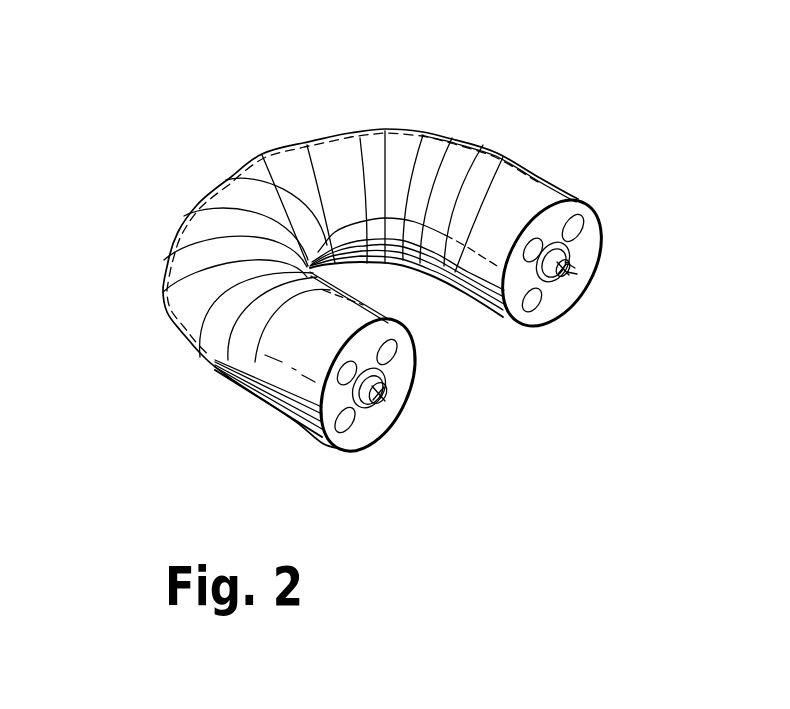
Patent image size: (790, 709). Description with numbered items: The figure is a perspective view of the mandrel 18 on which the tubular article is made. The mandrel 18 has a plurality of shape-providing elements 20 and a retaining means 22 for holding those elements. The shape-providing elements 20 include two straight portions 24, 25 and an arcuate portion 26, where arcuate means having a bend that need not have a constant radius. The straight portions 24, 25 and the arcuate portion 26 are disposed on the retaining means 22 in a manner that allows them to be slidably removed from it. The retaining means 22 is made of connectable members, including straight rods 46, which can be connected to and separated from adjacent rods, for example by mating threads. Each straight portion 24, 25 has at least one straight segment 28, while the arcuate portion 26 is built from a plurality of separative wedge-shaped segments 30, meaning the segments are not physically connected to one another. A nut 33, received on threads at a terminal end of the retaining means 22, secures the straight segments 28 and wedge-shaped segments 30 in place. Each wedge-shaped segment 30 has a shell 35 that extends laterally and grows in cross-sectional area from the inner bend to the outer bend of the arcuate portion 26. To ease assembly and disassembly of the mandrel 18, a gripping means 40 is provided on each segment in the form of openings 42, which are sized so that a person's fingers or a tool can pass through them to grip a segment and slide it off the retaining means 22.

The mandrel 18 is at (422, 72).
The shape-providing elements 20 is at (535, 166).
The retaining means 22 is at (576, 266).
The straight portion 24 is at (291, 418).
The straight portion 25 is at (560, 180).
The arcuate portion 26 is at (257, 147).
The straight segment 28 is at (487, 275).
The wedge-shaped segments 30 is at (160, 294).
The nut 33 is at (377, 402).
The shell 35 is at (360, 135).
The gripping means 40 is at (345, 435).
The openings 42 is at (530, 306).
The straight rods 46 is at (562, 284).